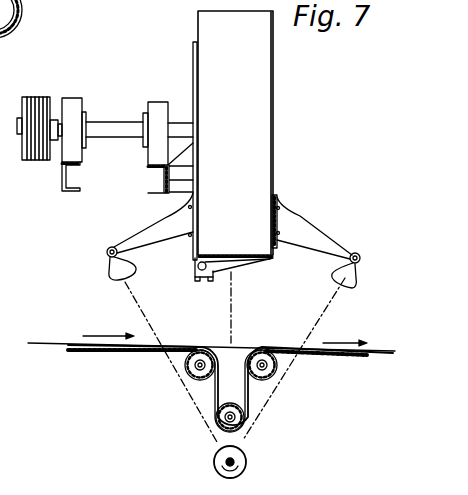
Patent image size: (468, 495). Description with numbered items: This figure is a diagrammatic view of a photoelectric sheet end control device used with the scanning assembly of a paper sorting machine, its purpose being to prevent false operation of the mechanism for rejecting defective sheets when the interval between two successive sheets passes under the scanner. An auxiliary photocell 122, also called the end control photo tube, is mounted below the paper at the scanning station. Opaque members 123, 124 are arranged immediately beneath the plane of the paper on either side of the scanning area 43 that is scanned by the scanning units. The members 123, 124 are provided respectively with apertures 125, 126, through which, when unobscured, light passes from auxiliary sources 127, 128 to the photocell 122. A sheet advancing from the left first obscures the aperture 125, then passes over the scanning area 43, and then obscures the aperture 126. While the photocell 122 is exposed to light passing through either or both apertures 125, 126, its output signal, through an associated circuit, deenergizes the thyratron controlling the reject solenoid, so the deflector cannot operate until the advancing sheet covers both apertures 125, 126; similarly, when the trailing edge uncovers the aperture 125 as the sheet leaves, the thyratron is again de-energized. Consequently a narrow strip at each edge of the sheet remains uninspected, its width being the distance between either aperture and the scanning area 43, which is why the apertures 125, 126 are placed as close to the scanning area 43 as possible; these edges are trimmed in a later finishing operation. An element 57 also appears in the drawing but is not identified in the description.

The conveyor belt assembly 43 is at (211, 375).
The roller 57 is at (20, 0).
The tension roller 122 is at (247, 458).
The conveyor belt run (incoming) 123 is at (122, 354).
The conveyor belt run (outgoing) 124 is at (336, 358).
The guide roller 125 is at (163, 355).
The guide roller 126 is at (302, 357).
The cam shoe 127 is at (110, 276).
The cam shoe 128 is at (356, 280).